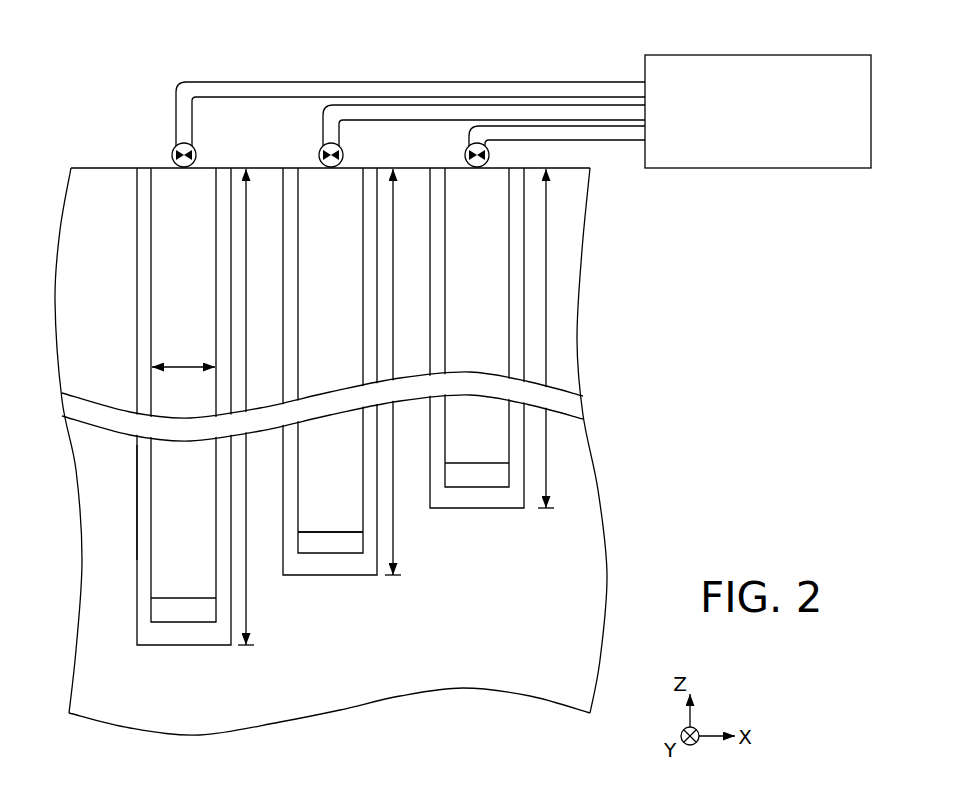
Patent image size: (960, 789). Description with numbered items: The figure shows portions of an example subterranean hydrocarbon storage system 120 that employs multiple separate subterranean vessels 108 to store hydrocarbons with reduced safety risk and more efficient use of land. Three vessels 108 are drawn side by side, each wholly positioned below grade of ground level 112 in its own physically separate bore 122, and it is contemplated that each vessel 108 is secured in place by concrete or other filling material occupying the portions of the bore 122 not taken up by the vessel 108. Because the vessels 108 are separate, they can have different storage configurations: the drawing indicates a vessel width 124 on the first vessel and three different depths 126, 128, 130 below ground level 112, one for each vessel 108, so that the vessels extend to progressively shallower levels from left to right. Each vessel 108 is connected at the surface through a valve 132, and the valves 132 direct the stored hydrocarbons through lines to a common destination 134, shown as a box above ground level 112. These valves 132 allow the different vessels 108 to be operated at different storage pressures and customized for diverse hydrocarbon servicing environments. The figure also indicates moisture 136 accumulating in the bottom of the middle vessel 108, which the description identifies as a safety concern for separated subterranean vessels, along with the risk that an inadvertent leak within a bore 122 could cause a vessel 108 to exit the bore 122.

The subterranean vessel 108 is at (188, 646).
The ground level 112 is at (78, 165).
The subterranean hydrocarbon storage system 120 is at (107, 82).
The bore 122 is at (136, 502).
The vessel width 124 is at (182, 361).
The depth 126 is at (248, 593).
The depth 128 is at (395, 530).
The depth 130 is at (545, 457).
The valve 132 is at (172, 153).
The destination 134 is at (758, 111).
The moisture 136 is at (329, 547).